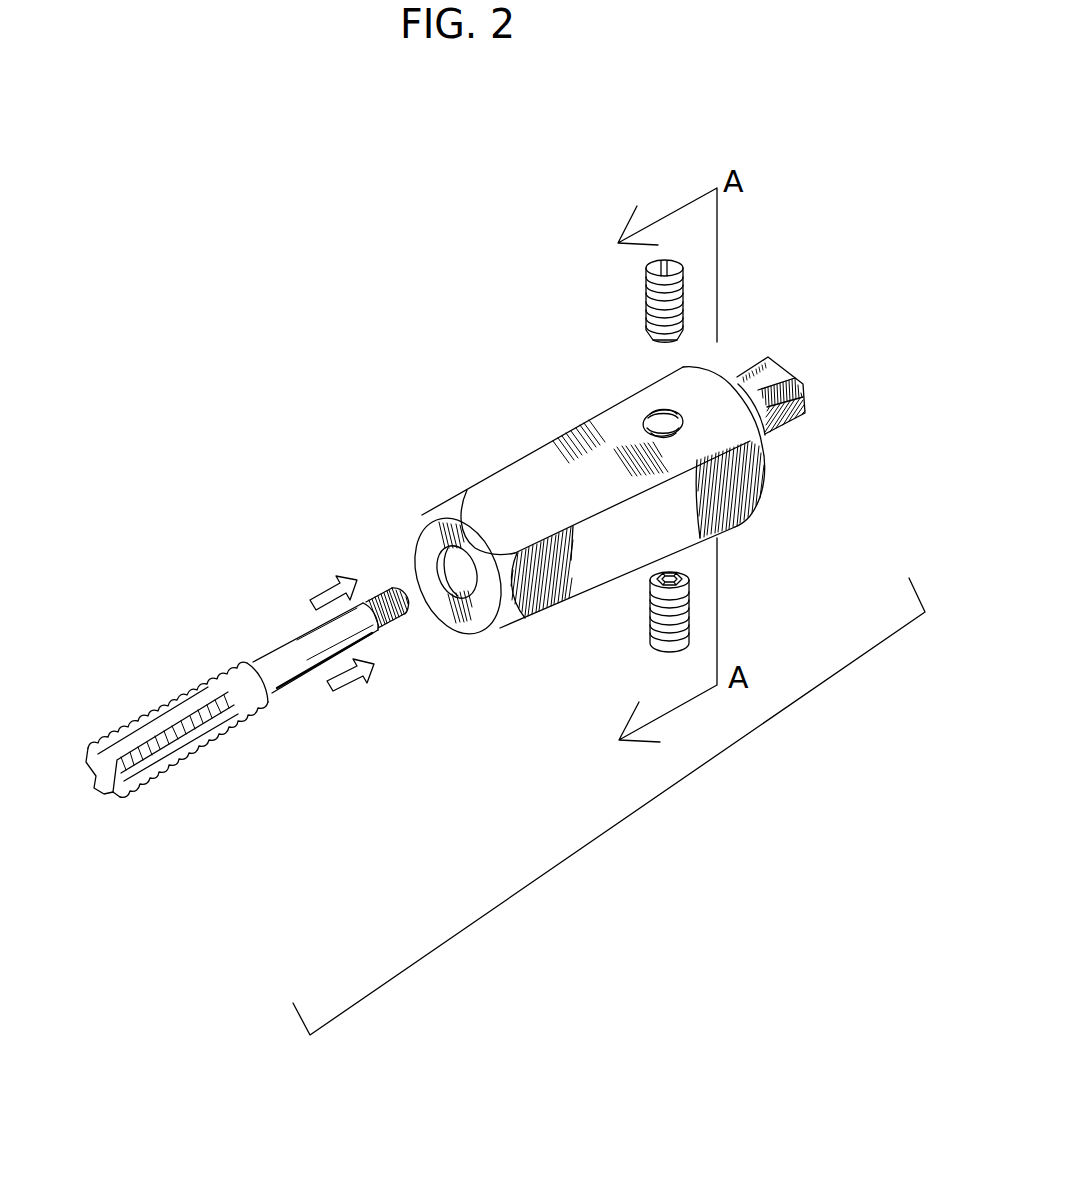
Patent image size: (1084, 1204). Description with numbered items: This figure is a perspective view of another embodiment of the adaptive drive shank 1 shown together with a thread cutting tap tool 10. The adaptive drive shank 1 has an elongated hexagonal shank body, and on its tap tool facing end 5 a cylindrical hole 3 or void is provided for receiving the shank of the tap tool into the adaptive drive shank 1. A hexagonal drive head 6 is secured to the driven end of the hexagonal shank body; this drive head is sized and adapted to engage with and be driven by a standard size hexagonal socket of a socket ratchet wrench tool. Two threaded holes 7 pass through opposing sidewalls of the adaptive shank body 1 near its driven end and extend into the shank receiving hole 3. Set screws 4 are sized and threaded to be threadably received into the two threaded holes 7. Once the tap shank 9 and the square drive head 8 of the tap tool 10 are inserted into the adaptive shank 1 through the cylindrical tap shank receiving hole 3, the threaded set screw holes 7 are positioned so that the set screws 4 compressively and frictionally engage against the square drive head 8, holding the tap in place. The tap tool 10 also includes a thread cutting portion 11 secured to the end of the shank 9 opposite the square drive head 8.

The adaptive drive shank 1 is at (426, 370).
The cylindrical hole 3 is at (458, 572).
The set screws 4 is at (646, 301).
The tap tool facing end 5 is at (418, 552).
The hexagonal drive head 6 is at (763, 372).
The threaded holes 7 is at (658, 411).
The square drive head 8 is at (383, 594).
The tap shank 9 is at (302, 657).
The tap tool 10 is at (135, 637).
The thread cutting portion 11 is at (203, 746).